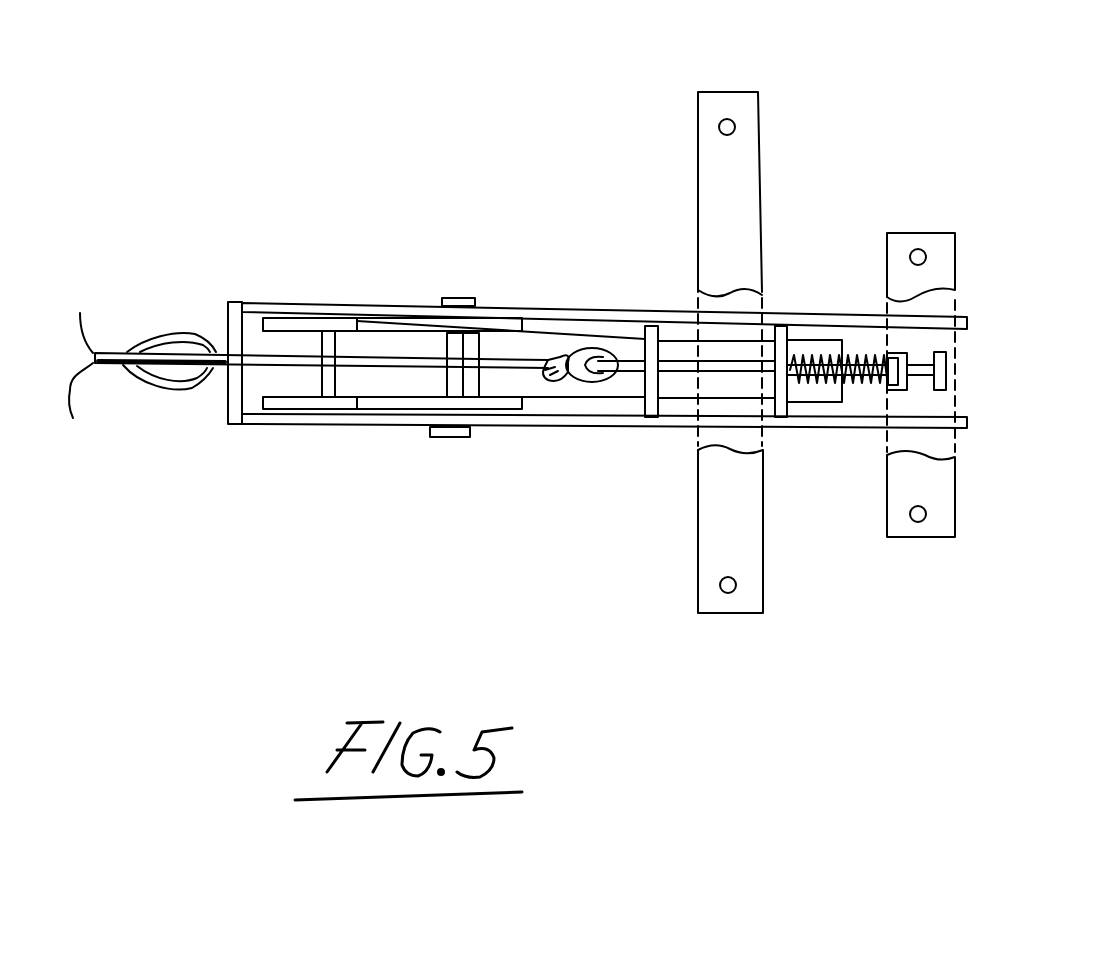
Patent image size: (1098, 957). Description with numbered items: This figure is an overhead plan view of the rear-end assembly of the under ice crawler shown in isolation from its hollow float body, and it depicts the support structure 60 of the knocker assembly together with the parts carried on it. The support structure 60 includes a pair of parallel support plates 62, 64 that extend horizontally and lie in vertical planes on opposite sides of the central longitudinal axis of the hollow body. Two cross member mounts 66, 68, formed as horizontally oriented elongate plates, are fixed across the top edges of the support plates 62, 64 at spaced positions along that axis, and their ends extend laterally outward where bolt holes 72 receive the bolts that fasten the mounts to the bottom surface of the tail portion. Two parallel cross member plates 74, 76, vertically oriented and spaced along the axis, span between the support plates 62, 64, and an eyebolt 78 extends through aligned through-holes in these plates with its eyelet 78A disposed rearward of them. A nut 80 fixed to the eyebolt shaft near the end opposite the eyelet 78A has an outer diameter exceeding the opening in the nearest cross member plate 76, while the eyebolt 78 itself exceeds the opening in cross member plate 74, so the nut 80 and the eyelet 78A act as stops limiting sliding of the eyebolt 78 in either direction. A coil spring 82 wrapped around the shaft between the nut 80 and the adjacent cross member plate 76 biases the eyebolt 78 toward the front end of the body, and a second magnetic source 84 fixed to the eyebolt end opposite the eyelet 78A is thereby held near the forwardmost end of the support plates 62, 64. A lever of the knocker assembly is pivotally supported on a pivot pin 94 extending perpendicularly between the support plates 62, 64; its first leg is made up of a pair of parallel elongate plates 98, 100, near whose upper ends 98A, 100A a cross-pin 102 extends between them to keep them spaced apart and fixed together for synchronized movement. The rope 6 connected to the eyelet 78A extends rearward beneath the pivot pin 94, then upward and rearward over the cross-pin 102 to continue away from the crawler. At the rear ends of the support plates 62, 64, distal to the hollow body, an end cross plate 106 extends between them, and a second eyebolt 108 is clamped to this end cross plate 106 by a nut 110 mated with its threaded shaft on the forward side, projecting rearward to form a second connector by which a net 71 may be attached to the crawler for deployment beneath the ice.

The rope 6 is at (417, 370).
The support structure 60 is at (633, 311).
The support plate 62 is at (560, 311).
The support plate 64 is at (552, 424).
The cross member mount 66 is at (748, 126).
The cross member mount 68 is at (943, 256).
The net 71 is at (160, 333).
The bolt holes 72 is at (727, 118).
The cross member plate 74 is at (645, 382).
The cross member plate 76 is at (788, 390).
The eyebolt 78 is at (683, 372).
The eyelet 78A is at (613, 343).
The nut 80 is at (900, 392).
The coil spring 82 is at (862, 354).
The second magnetic source 84 is at (948, 366).
The pivot pin 94 is at (455, 350).
The elongate plate 98 is at (387, 327).
The upper end 98A is at (292, 327).
The elongate plate 100 is at (383, 407).
The upper end 100A is at (307, 407).
The cross-pin 102 is at (350, 336).
The end cross plate 106 is at (227, 325).
The second eyebolt 108 is at (216, 381).
The nut 110 is at (257, 370).